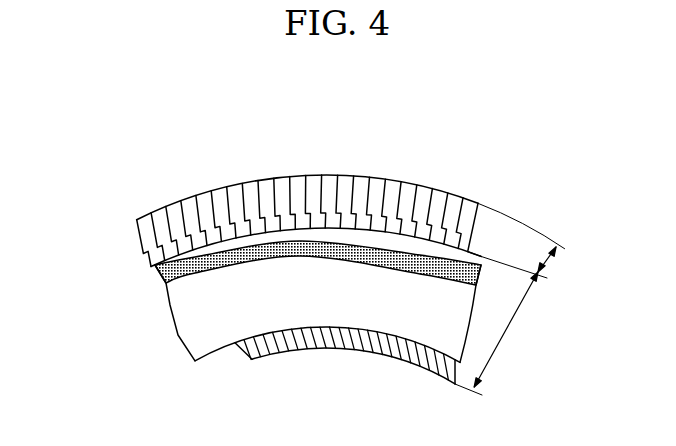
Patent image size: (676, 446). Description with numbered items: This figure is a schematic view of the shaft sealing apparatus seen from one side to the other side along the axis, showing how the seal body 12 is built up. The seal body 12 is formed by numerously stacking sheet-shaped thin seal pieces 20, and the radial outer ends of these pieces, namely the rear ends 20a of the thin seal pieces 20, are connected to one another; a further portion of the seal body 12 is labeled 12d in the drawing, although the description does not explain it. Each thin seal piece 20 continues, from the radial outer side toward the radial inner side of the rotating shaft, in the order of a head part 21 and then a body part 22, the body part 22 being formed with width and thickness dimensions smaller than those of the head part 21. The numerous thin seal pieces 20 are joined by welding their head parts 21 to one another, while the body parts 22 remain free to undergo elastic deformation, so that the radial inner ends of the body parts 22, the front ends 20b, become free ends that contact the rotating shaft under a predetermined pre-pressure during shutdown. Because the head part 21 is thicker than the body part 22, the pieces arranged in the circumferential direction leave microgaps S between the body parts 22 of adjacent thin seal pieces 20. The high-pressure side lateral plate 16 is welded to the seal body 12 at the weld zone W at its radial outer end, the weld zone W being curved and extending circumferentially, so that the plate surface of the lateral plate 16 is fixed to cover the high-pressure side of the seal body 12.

The seal body 12 is at (207, 133).
The end face of core 12d is at (129, 240).
The high-pressure side lateral plate 16 is at (393, 237).
The thin seal piece 20 is at (360, 167).
The rear end 20a is at (158, 260).
The front end 20b is at (273, 362).
The weld zone W is at (441, 258).
The microgap S is at (358, 367).
The head part 21 is at (549, 262).
The body part 22 is at (508, 334).